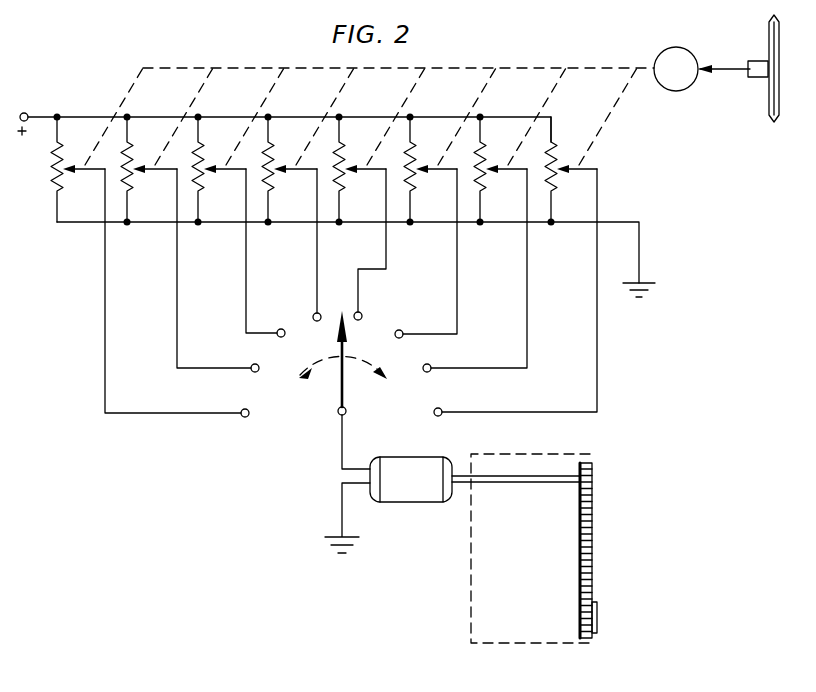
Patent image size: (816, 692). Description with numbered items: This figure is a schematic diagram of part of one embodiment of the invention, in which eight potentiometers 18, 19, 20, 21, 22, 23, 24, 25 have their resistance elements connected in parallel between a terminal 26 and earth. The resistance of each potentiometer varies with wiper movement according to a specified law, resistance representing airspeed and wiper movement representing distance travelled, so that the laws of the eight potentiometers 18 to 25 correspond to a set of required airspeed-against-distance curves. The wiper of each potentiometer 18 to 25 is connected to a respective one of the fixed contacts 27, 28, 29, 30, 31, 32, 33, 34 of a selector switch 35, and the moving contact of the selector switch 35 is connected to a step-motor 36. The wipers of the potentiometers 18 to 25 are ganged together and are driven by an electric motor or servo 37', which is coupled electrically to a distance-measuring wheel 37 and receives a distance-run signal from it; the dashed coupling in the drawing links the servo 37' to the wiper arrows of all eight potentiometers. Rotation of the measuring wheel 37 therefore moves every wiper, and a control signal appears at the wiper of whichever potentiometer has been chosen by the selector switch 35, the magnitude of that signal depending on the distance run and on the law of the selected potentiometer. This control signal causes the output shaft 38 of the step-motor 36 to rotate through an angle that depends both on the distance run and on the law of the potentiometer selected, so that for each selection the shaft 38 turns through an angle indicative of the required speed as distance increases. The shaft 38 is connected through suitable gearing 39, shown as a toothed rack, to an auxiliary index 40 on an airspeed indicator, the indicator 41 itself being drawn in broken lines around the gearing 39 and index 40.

The potentiometer 18 is at (51, 156).
The potentiometer 19 is at (133, 178).
The potentiometer 20 is at (204, 180).
The potentiometer 21 is at (273, 183).
The potentiometer 22 is at (343, 183).
The potentiometer 23 is at (414, 182).
The potentiometer 24 is at (484, 183).
The potentiometer 25 is at (556, 183).
The terminal 26 is at (27, 112).
The fixed contact 27 is at (240, 419).
The fixed contact 28 is at (250, 372).
The fixed contact 29 is at (278, 328).
The fixed contact 30 is at (320, 312).
The fixed contact 31 is at (363, 312).
The fixed contact 32 is at (404, 330).
The fixed contact 33 is at (433, 365).
The fixed contact 34 is at (444, 409).
The selector switch 35 is at (381, 383).
The step-motor 36 is at (413, 484).
The distance-measuring wheel 37 is at (738, 85).
The electric motor or servo 37' is at (687, 92).
The output shaft 38 is at (487, 476).
The gearing 39 is at (598, 496).
The auxiliary index 40 is at (600, 614).
The airspeed indicator 41 is at (522, 644).